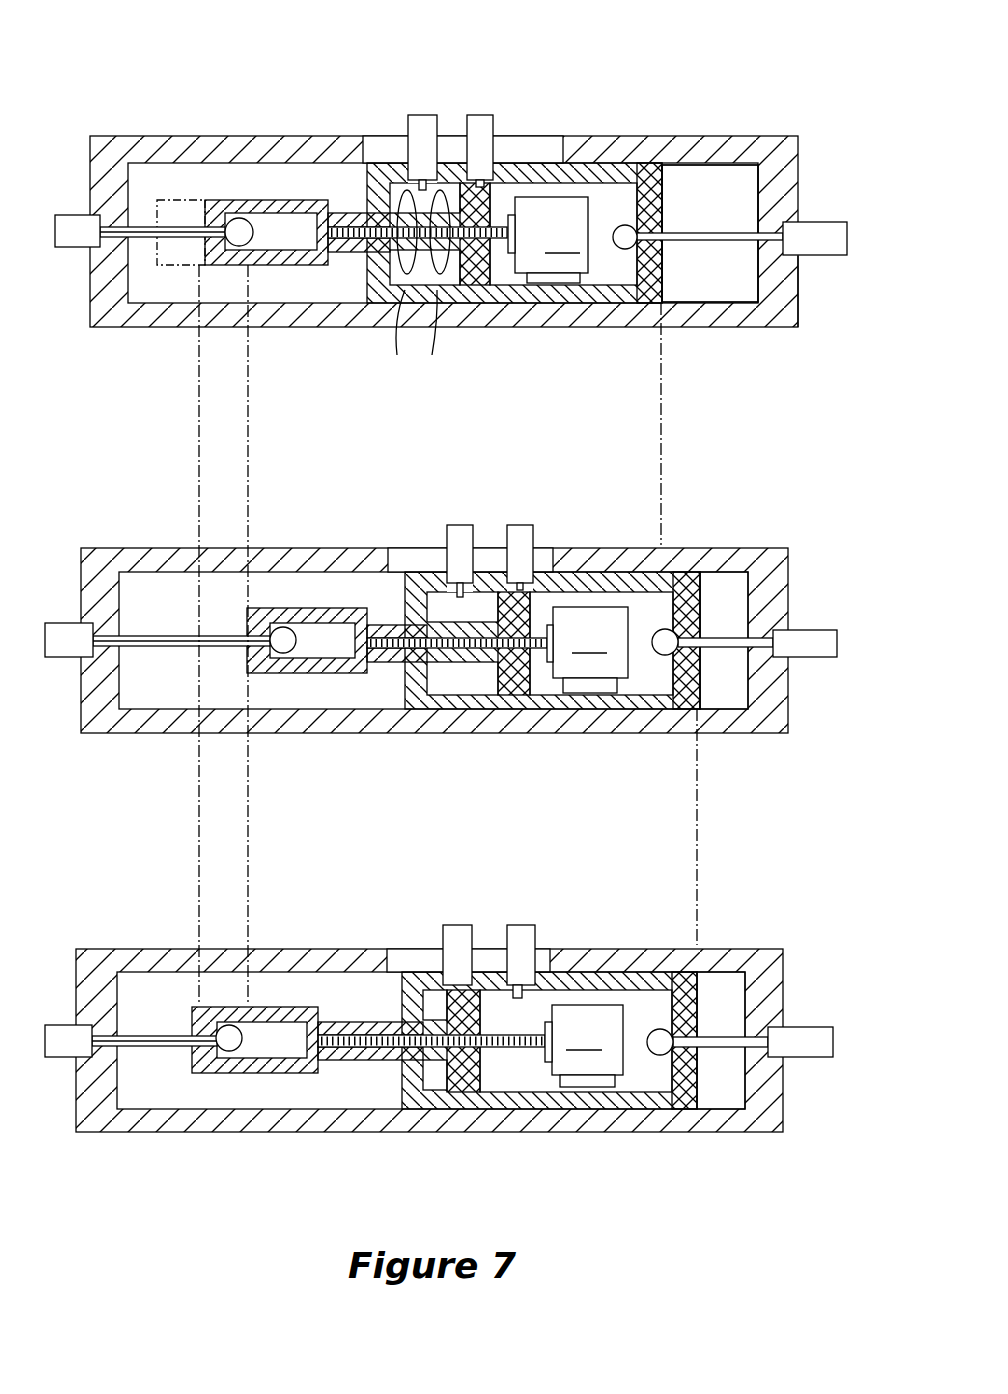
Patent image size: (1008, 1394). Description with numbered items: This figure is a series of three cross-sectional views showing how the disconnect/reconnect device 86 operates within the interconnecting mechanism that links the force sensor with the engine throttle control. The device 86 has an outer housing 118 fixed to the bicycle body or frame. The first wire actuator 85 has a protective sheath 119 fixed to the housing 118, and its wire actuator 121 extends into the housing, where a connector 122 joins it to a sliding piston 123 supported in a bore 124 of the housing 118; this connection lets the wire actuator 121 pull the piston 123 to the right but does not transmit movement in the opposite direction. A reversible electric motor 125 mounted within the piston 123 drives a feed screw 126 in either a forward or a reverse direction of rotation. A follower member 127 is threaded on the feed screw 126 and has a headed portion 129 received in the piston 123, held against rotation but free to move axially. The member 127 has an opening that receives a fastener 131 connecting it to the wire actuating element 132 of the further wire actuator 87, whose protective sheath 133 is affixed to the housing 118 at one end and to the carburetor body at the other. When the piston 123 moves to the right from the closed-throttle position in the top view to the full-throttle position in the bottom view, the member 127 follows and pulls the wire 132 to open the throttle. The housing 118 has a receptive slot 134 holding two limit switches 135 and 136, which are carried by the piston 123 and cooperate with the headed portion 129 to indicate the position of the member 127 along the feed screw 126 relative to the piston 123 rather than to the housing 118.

The wire actuator 85 is at (815, 220).
The disconnect/reconnect device 86 is at (772, 76).
The wire actuator 87 is at (69, 211).
The outer housing 118 is at (641, 134).
The protective sheath 119 is at (814, 256).
The wire actuator 121 is at (708, 230).
The connector 122 is at (630, 250).
The sliding piston 123 is at (598, 306).
The bore 124 is at (704, 302).
The reversible electric motor 125 is at (538, 262).
The feed screw 126 is at (358, 240).
The member 127 is at (158, 268).
The headed portion 129 is at (462, 300).
The fastener 131 is at (241, 228).
The wire actuating element 132 is at (167, 196).
The protective sheath 133 is at (73, 248).
The receptive slot 134 is at (552, 150).
The limit switch 135 is at (481, 148).
The limit switch 136 is at (421, 148).